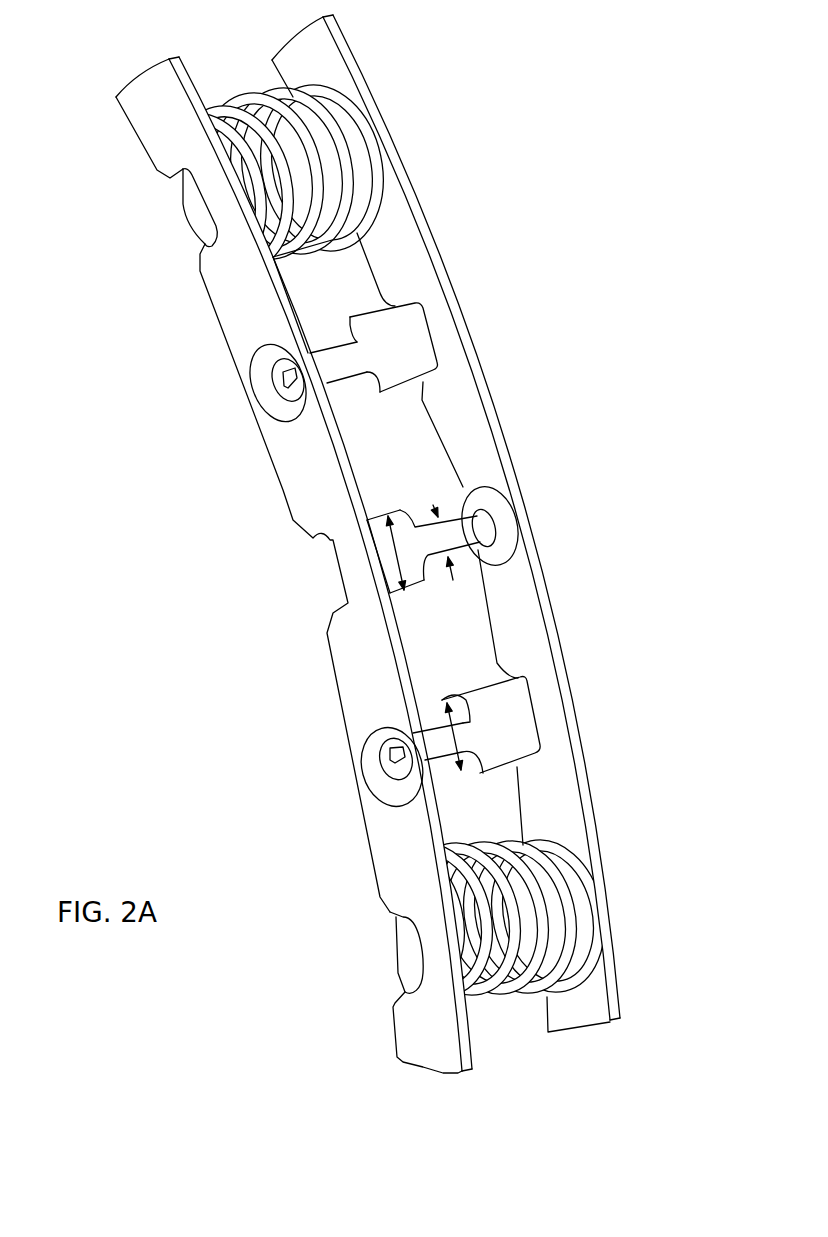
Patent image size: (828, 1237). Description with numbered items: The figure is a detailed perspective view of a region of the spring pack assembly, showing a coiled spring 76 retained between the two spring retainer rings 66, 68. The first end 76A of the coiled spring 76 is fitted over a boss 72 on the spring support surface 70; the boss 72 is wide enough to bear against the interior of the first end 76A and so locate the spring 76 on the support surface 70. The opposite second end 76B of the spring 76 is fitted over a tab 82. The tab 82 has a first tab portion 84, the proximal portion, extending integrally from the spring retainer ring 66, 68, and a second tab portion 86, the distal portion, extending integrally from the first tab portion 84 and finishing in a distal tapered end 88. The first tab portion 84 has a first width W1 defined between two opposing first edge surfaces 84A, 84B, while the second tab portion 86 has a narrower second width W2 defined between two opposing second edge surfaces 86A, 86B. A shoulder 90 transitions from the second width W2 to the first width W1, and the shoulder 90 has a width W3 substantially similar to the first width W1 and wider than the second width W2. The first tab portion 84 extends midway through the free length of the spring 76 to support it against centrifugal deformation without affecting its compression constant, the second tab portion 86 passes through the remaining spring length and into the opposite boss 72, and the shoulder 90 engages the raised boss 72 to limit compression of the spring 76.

The spring retainer ring 66 is at (157, 100).
The spring retainer ring 68 is at (315, 53).
The spring support surface 70 is at (507, 590).
The boss 72 is at (497, 510).
The coiled spring 76 is at (258, 110).
The first end 76A is at (377, 151).
The second end 76B is at (233, 130).
The tab 82 is at (420, 311).
The first tab portion 84 is at (397, 325).
The first edge surface 84A is at (375, 513).
The first edge surface 84B is at (400, 593).
The second tab portion 86 is at (328, 362).
The second edge surface 86A is at (425, 527).
The second edge surface 86B is at (453, 580).
The distal tapered end 88 is at (297, 367).
The shoulder 90 is at (458, 725).
The first width W1 is at (397, 549).
The second width W2 is at (436, 510).
The shoulder width W3 is at (455, 736).